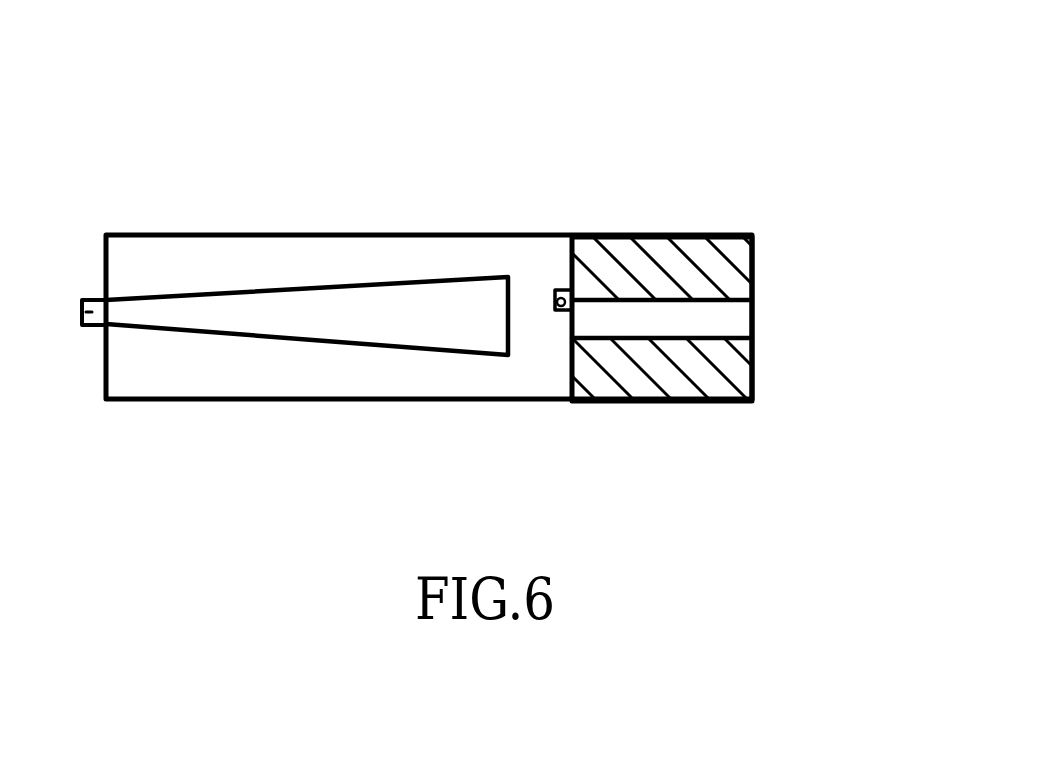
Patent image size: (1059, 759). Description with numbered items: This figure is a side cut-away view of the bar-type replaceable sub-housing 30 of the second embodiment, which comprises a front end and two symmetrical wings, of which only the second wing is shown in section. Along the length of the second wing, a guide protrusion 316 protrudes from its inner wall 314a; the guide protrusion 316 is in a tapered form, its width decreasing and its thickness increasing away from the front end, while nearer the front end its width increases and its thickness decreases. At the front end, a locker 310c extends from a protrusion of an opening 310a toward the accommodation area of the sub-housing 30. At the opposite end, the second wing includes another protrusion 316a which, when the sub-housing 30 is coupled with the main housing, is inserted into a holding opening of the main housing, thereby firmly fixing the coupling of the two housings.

The bar-type replaceable sub-housing 30 is at (643, 237).
The opening 310a is at (738, 318).
The locker 310c is at (553, 300).
The inner wall 314a is at (255, 263).
The guide protrusion 316 is at (391, 311).
The protrusion 316a is at (80, 300).